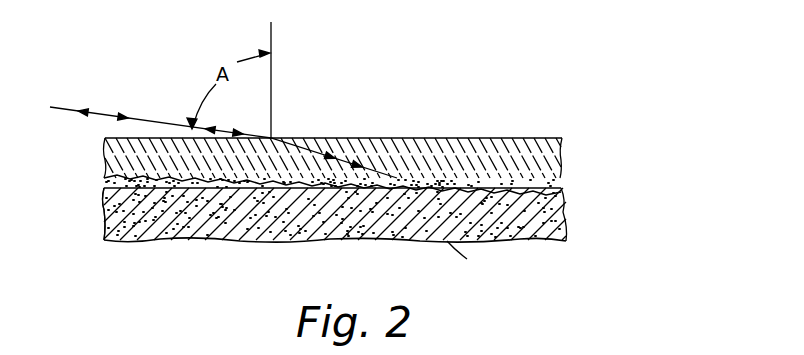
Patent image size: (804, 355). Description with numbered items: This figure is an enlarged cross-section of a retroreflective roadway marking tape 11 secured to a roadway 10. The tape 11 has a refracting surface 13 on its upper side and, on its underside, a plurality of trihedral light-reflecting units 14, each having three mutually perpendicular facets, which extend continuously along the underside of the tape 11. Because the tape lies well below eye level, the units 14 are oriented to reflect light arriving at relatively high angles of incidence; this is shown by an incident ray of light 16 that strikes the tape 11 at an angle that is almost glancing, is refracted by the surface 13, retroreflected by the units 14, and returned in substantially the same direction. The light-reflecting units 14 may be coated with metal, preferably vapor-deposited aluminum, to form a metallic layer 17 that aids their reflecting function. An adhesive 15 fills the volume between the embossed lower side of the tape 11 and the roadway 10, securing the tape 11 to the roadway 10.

The roadway 10 is at (469, 259).
The tape 11 is at (549, 161).
The refracting surface 13 is at (462, 138).
The trihedral light-reflecting units 14 is at (473, 189).
The adhesive 15 is at (537, 180).
The incident ray of light 16 is at (174, 124).
The metallic layer 17 is at (113, 203).